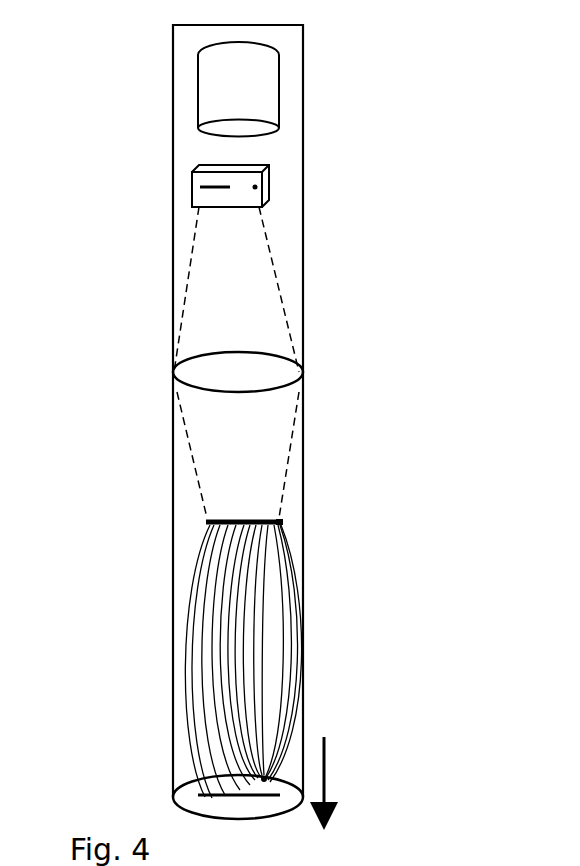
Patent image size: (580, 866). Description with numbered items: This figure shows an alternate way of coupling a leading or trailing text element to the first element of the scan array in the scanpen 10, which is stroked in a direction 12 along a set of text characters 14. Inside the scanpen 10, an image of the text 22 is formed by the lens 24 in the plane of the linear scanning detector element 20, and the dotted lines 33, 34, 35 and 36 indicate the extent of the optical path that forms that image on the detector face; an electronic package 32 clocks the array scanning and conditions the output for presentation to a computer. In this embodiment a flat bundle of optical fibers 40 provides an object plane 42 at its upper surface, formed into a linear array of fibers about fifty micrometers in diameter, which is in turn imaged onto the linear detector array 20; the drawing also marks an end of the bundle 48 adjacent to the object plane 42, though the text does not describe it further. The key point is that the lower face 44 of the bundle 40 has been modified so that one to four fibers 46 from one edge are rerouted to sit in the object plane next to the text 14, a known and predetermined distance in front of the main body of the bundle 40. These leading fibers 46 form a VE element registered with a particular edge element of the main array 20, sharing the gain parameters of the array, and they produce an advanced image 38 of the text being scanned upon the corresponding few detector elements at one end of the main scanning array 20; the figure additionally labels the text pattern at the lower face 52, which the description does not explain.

The scanpen 10 is at (173, 558).
The direction 12 is at (301, 790).
The text characters 14 is at (208, 793).
The linear scanning detector element 20 is at (262, 173).
The image of the text 22 is at (262, 172).
The lens 24 is at (238, 367).
The electronic package 32 is at (238, 89).
The dotted line 33 is at (290, 448).
The dotted line 34 is at (278, 285).
The dotted line 35 is at (193, 453).
The dotted line 36 is at (187, 289).
The advanced image 38 is at (268, 203).
The flat bundle of optical fibers 40 is at (222, 662).
The object plane 42 is at (237, 518).
The lower face 44 is at (266, 787).
The fibers 46 is at (297, 665).
The input end of fiber bundle 48 is at (282, 524).
The transmitted image (abc) 52 is at (262, 773).